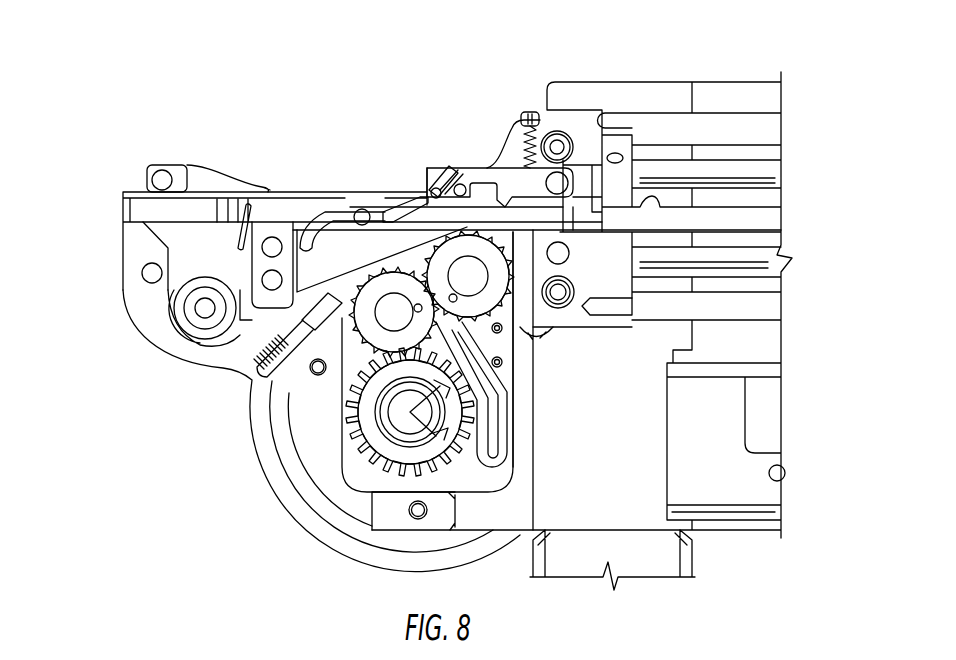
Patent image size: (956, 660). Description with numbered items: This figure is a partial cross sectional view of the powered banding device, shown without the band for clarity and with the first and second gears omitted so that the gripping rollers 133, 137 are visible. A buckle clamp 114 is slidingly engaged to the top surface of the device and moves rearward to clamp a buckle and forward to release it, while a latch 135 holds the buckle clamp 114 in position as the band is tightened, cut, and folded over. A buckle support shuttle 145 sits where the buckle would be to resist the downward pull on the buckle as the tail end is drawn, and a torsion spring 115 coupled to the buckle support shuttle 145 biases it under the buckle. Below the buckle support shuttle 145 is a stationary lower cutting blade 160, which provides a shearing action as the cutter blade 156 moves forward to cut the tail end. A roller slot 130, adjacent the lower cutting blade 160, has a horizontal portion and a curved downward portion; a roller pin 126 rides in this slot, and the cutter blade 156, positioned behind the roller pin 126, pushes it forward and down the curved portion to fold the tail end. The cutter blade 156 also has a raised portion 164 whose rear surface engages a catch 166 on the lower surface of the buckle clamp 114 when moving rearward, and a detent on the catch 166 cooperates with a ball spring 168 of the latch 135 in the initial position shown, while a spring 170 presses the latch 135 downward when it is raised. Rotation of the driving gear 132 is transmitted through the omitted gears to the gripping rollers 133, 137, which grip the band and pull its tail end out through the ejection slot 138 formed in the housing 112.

The housing 112 is at (178, 347).
The buckle clamp 114 is at (162, 166).
The torsion spring 115 is at (197, 310).
The roller pin 126 is at (360, 211).
The roller slot 130 is at (313, 226).
The driving gear 132 is at (370, 428).
The gripping roller 133 is at (385, 288).
The latch 135 is at (490, 168).
The gripping roller 137 is at (493, 288).
The ejection slot 138 is at (493, 422).
The buckle support shuttle 145 is at (263, 208).
The cutter blade 156 is at (563, 150).
The lower cutting blade 160 is at (265, 267).
The raised portion 164 is at (384, 216).
The catch 166 is at (434, 188).
The ball spring 168 is at (447, 176).
The spring 170 is at (527, 113).